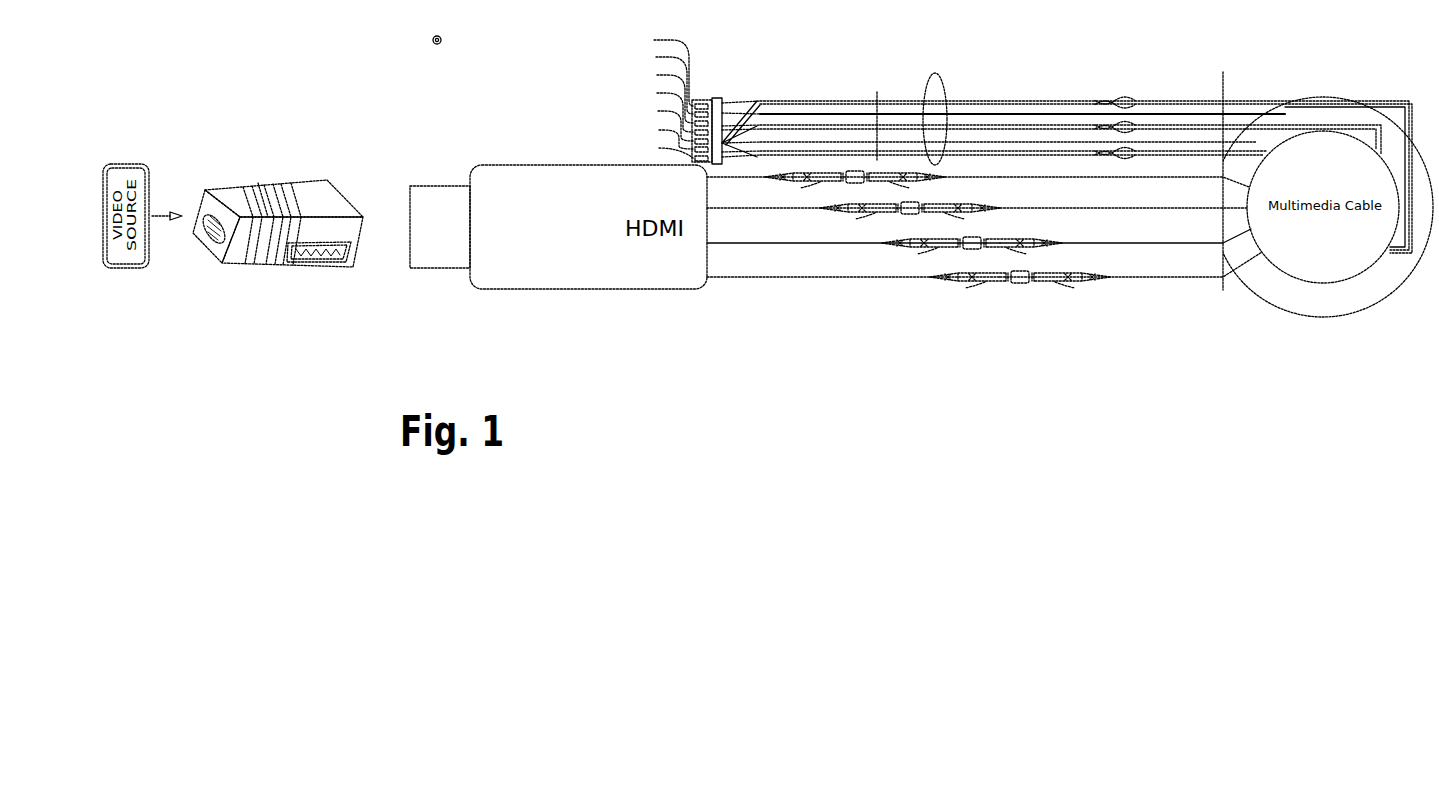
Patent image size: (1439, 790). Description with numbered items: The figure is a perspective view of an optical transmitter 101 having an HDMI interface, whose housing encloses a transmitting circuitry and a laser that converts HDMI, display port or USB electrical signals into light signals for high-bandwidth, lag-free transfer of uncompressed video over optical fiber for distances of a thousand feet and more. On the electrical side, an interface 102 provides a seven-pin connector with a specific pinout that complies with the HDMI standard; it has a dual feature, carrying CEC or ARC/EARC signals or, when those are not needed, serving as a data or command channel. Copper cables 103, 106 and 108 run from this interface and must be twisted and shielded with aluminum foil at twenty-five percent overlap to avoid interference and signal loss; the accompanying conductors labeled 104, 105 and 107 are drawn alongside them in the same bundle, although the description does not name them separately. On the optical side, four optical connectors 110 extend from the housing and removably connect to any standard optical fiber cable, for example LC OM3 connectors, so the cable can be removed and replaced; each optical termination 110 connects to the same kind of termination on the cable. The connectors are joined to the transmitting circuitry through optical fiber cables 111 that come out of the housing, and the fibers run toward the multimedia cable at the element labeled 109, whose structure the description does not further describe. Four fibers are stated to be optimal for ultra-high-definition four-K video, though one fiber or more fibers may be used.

The optical transmitter 101 is at (337, 185).
The interface 102 is at (705, 98).
The copper cable 103 is at (970, 100).
The HPD/eARC twisted pair wire 104 is at (1003, 108).
The ground wire 105 is at (1033, 110).
The copper cable 106 is at (1070, 125).
The +5V wire 107 is at (1152, 142).
The copper cable 108 is at (1200, 150).
The video wires at multimedia cable 109 is at (1115, 178).
The optical connector 110 is at (990, 287).
The optical fiber cable 111 is at (723, 177).